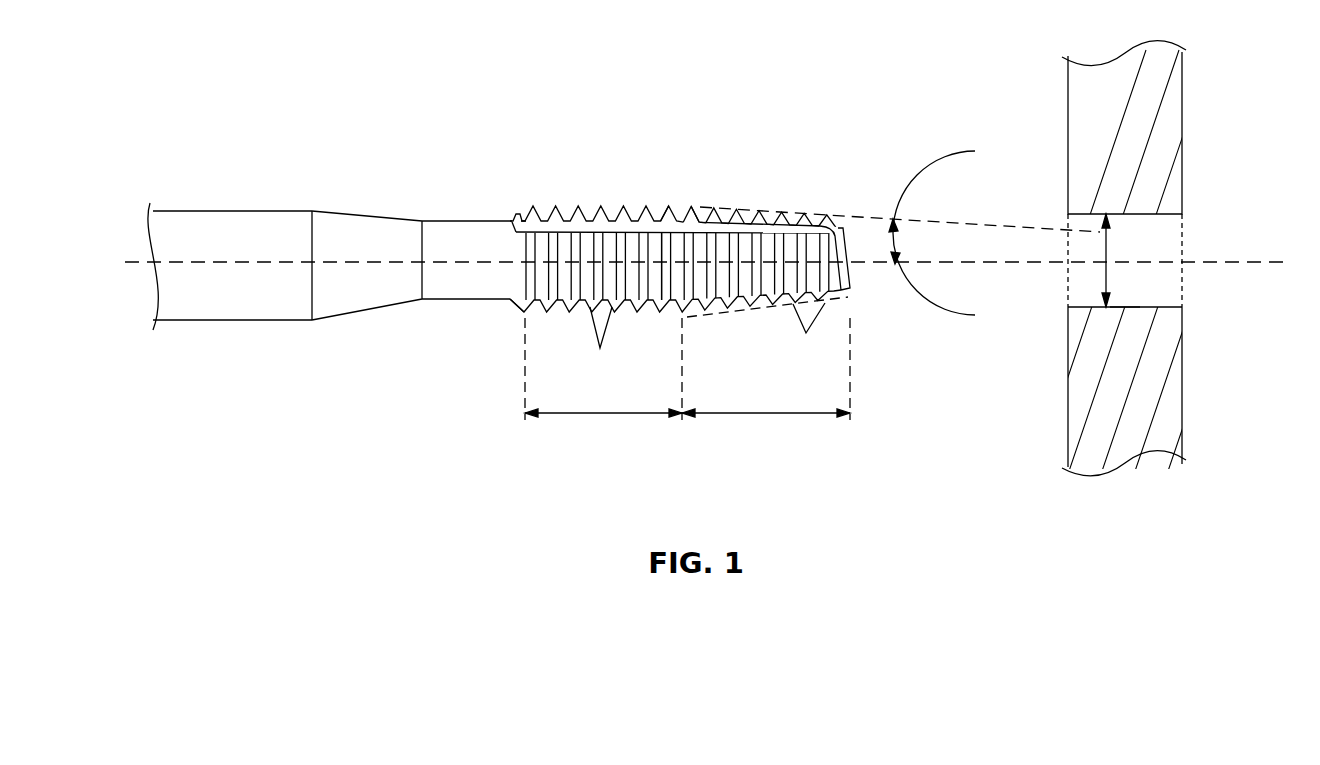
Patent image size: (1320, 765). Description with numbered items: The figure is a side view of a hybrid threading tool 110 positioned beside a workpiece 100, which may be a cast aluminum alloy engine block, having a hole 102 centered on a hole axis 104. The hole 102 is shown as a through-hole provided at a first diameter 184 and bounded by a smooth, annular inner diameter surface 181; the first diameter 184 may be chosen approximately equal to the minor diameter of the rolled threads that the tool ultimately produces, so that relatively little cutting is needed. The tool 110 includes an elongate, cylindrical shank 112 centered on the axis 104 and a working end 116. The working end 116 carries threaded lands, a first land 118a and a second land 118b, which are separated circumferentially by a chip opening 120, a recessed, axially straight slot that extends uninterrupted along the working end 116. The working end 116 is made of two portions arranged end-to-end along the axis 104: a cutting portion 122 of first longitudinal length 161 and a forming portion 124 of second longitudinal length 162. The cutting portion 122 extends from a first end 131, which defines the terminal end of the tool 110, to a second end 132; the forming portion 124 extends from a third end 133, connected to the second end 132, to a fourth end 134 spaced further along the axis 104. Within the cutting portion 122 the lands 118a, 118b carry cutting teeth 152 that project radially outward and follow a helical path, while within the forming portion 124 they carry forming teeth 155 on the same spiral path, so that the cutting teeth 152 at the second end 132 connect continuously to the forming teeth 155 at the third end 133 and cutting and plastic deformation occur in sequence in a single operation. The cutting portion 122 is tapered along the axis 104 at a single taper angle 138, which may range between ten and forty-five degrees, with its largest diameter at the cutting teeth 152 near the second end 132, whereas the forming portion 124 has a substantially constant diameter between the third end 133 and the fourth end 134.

The workpiece 100 is at (1160, 122).
The hole 102 is at (1172, 236).
The hole axis 104 is at (1251, 263).
The hybrid threading tool 110 is at (384, 184).
The elongate shank 112 is at (270, 222).
The working end 116 is at (535, 102).
The first land 118a is at (668, 223).
The second land 118b is at (678, 268).
The chip opening 120 is at (748, 230).
The cutting portion 122 is at (830, 163).
The forming portion 124 is at (535, 163).
The first end 131 is at (855, 284).
The second end 132 is at (684, 318).
The third end 133 is at (688, 220).
The fourth end 134 is at (520, 216).
The taper angle 138 is at (962, 148).
The cutting teeth 152 is at (808, 337).
The forming teeth 155 is at (603, 346).
The first longitudinal length 161 is at (772, 414).
The second longitudinal length 162 is at (580, 414).
The inner diameter surface 181 is at (1122, 306).
The first diameter 184 is at (1098, 270).